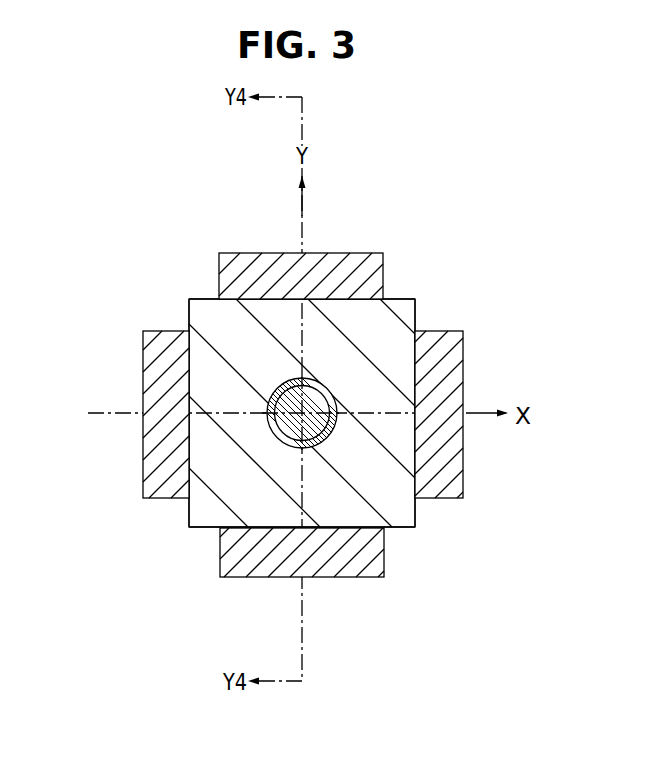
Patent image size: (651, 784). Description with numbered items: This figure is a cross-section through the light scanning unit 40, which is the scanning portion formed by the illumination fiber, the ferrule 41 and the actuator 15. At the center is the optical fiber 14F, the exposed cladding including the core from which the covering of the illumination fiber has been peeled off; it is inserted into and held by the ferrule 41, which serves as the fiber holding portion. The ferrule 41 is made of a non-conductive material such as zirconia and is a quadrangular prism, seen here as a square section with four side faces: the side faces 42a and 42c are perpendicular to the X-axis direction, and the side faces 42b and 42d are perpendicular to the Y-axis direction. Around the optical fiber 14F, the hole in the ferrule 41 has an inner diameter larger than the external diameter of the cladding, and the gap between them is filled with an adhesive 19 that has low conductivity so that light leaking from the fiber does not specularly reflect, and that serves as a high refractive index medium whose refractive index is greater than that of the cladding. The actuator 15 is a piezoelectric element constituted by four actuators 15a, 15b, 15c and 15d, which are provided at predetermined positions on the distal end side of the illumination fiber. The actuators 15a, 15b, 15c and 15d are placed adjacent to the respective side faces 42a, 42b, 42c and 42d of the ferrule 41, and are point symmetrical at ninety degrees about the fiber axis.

The light scanning unit 40 is at (308, 373).
The ferrule 41 is at (416, 529).
The side face 42a is at (417, 514).
The side face 42b is at (205, 299).
The side face 42c is at (189, 310).
The side face 42d is at (400, 529).
The actuator 15 is at (307, 428).
The actuator 15a is at (445, 331).
The actuator 15b is at (383, 268).
The actuator 15c is at (160, 498).
The actuator 15d is at (220, 560).
The adhesive 19 is at (288, 390).
The optical fiber 14F is at (331, 386).